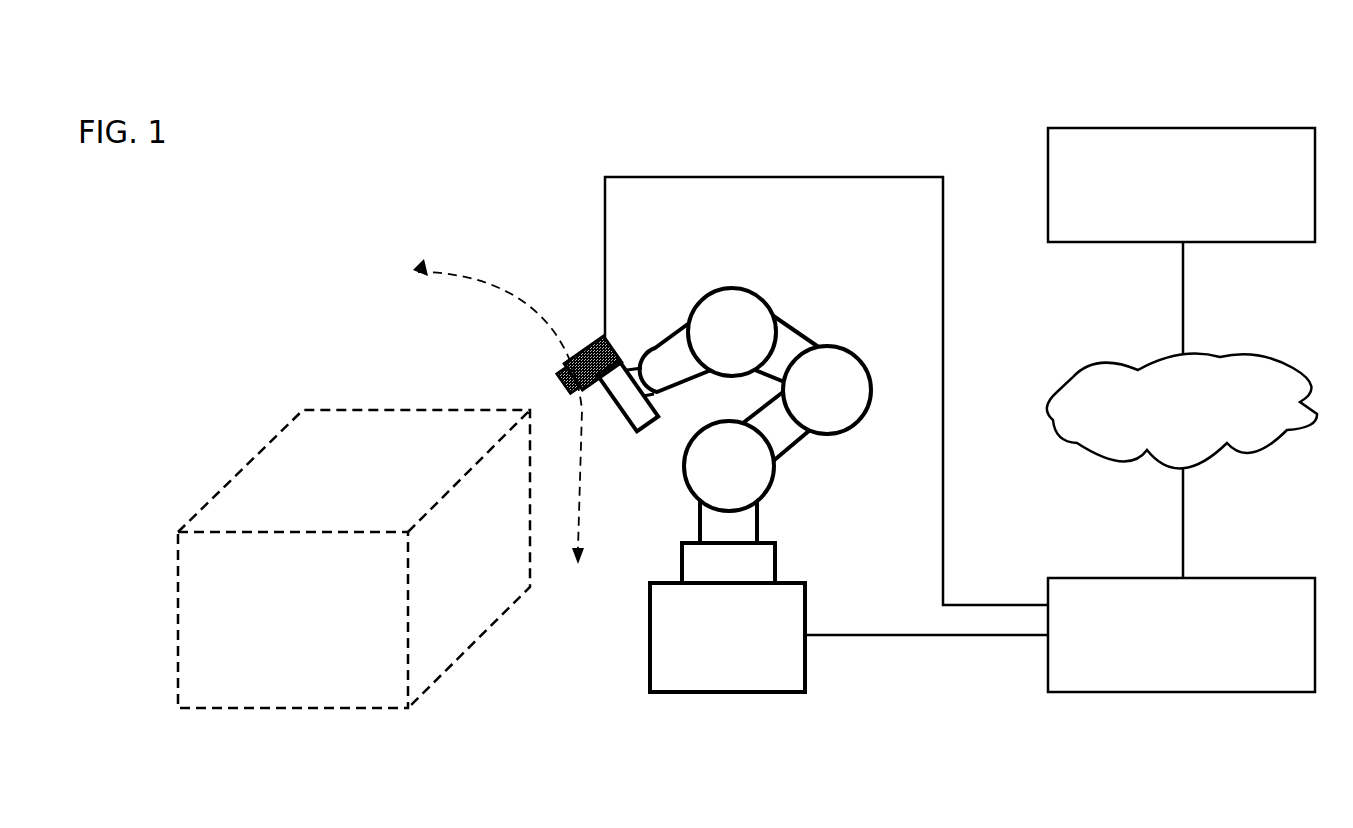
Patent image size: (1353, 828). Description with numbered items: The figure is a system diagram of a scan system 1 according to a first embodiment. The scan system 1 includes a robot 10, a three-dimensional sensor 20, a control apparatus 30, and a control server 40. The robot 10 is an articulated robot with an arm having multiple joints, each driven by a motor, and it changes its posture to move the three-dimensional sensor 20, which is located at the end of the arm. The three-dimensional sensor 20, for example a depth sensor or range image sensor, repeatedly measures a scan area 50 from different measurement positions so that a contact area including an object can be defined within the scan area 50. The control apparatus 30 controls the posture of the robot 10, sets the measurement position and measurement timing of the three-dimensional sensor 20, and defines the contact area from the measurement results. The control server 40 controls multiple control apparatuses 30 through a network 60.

The scan system 1 is at (641, 74).
The robot 10 is at (733, 328).
The 3D sensor 20 is at (597, 347).
The control apparatus 30 is at (1263, 578).
The control server 40 is at (1267, 128).
The scan area 50 is at (287, 427).
The network 60 is at (1263, 356).